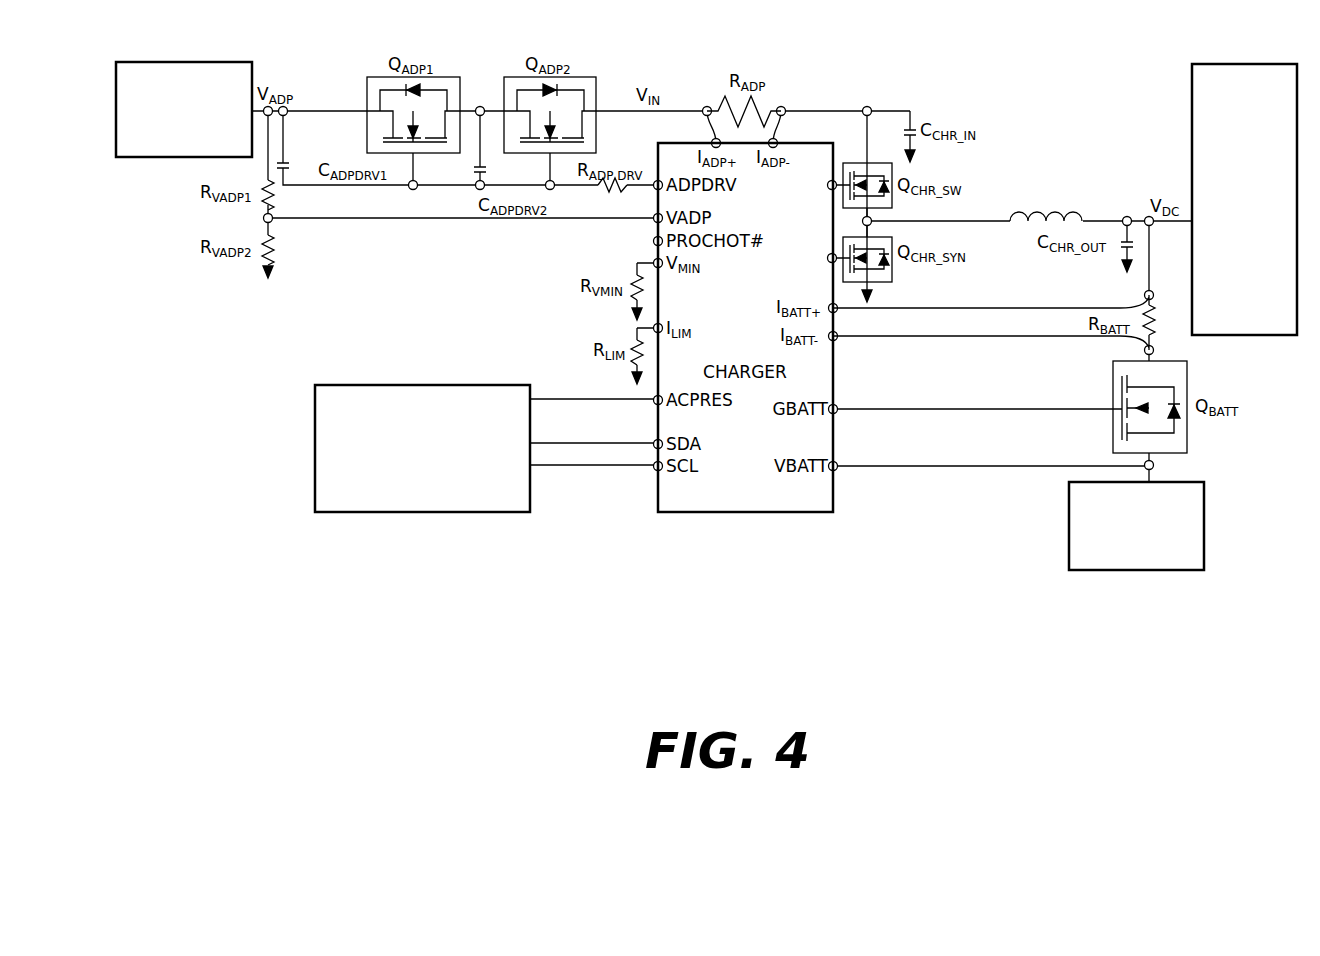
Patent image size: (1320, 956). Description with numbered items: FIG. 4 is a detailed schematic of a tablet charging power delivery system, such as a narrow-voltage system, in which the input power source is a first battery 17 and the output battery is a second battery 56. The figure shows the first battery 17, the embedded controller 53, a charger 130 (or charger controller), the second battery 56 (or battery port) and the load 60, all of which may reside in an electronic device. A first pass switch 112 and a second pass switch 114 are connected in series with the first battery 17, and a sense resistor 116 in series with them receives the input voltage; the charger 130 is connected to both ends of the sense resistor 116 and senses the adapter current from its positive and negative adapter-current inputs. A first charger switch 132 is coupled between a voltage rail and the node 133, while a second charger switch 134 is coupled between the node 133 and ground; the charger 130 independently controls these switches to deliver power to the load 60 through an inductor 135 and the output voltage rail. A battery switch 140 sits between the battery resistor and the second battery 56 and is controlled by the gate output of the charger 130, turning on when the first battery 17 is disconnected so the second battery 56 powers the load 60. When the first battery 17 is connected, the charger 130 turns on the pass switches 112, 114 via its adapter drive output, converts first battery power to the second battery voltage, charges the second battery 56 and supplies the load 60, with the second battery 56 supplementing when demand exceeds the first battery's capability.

The first battery 17 is at (172, 62).
The first pass switch 112 is at (422, 50).
The second pass switch 114 is at (560, 50).
The sense resistor 116 is at (754, 60).
The load 60 is at (1207, 64).
The first charger switch 132 is at (909, 167).
The node 133 is at (867, 221).
The second charger switch 134 is at (899, 268).
The inductor 135 is at (1061, 188).
The battery switch 140 is at (1187, 435).
The charger 130 is at (760, 512).
The embedded controller 53 is at (418, 512).
The second battery 56 is at (1150, 570).